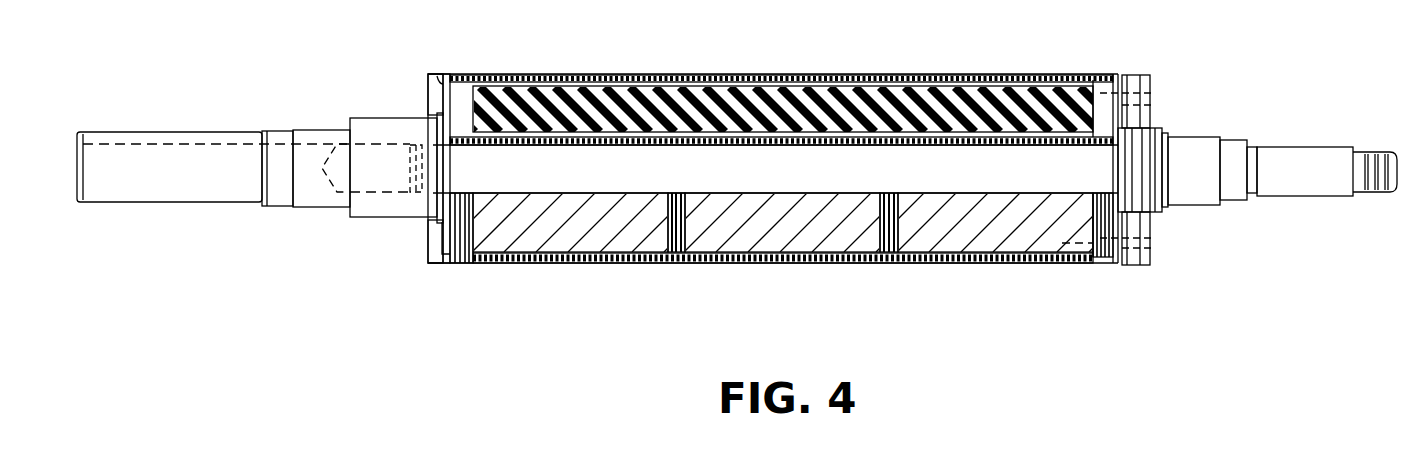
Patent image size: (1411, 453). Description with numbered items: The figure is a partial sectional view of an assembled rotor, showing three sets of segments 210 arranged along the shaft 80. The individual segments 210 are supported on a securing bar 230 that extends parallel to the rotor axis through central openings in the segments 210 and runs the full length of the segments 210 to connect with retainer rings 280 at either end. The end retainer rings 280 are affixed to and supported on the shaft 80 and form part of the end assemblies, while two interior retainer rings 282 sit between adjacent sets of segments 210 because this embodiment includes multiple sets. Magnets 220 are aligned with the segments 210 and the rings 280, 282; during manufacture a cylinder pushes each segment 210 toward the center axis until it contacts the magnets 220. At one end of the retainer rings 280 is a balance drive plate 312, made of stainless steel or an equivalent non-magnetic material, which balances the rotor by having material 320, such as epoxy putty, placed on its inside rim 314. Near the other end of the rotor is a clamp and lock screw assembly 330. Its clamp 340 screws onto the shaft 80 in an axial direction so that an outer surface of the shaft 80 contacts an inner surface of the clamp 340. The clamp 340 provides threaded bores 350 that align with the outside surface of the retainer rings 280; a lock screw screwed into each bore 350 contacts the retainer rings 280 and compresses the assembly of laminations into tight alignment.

The shaft 80 is at (745, 157).
The segments 210 is at (600, 266).
The magnets 220 is at (538, 237).
The securing bar 230 is at (950, 103).
The retainer rings 280 is at (458, 263).
The interior retainer rings 282 is at (678, 267).
The balance drive plate 312 is at (433, 97).
The inside rim 314 is at (438, 258).
The material 320 is at (438, 80).
The clamp and lock screw assembly 330 is at (1160, 68).
The clamp 340 is at (1152, 222).
The threaded bores 350 is at (1140, 255).